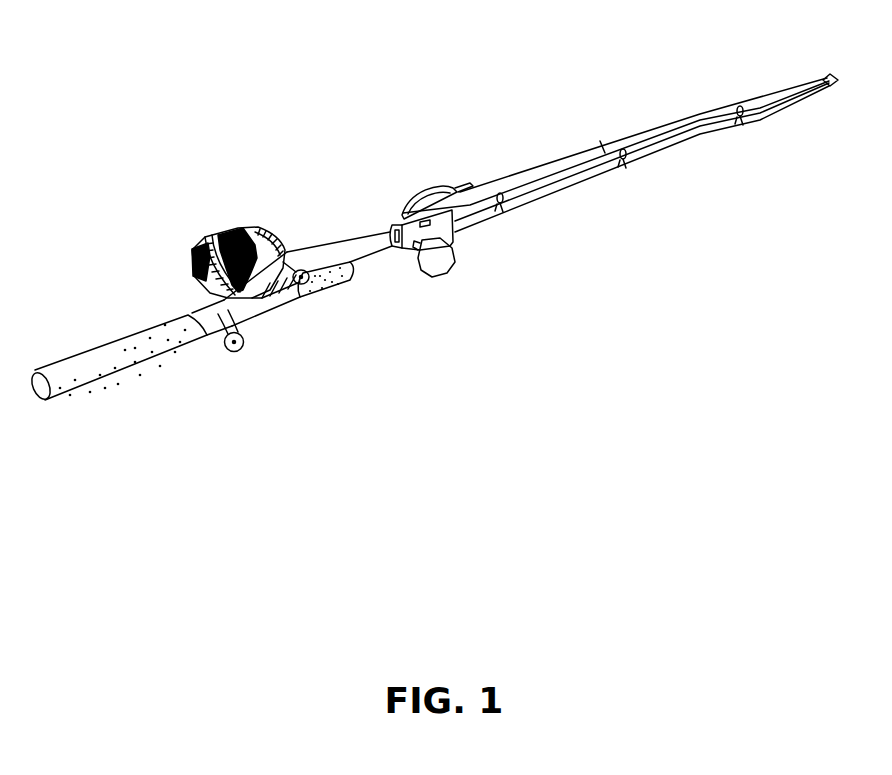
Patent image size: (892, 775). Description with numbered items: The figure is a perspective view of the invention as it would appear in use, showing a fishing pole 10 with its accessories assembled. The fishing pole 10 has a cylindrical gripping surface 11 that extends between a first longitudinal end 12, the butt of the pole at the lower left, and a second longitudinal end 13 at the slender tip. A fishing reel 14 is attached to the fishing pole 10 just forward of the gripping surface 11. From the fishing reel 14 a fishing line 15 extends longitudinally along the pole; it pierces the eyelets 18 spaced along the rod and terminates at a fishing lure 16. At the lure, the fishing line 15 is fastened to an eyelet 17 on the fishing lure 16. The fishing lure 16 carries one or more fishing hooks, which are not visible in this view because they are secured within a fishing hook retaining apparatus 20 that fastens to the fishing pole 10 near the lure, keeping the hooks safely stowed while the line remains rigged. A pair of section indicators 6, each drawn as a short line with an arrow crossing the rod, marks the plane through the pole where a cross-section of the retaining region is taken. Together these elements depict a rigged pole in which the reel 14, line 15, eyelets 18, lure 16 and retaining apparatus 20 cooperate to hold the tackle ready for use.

The fishing pole 10 is at (365, 263).
The cylindrical gripping surface 11 is at (145, 347).
The first longitudinal end 12 is at (45, 403).
The second longitudinal end 13 is at (835, 84).
The fishing reel 14 is at (237, 233).
The fishing line 15 is at (598, 145).
The fishing lure 16 is at (410, 205).
The eyelet 17 is at (468, 187).
The eyelets 18 is at (826, 86).
The fishing hook retaining apparatus 20 is at (445, 275).
The section line indicator 6 is at (353, 157).